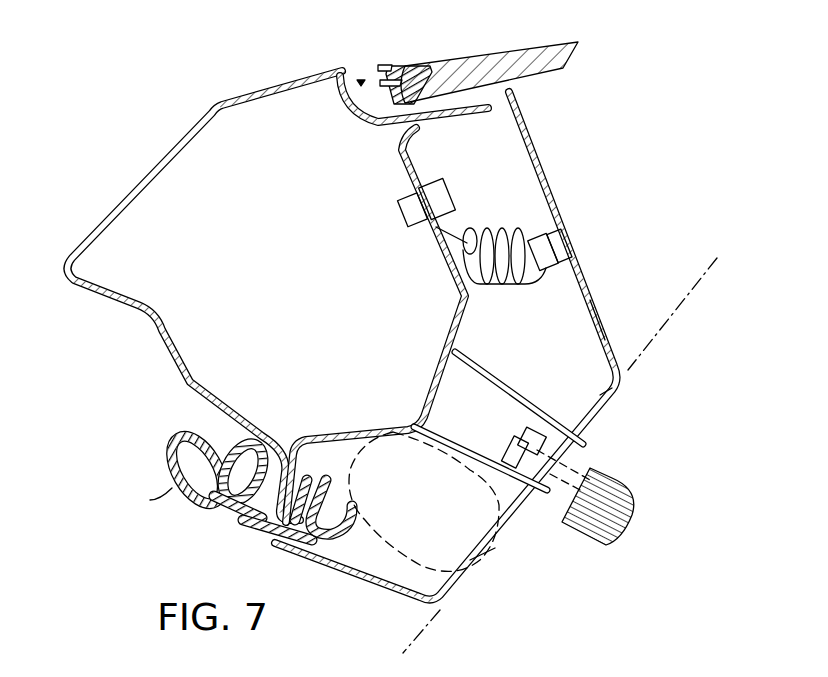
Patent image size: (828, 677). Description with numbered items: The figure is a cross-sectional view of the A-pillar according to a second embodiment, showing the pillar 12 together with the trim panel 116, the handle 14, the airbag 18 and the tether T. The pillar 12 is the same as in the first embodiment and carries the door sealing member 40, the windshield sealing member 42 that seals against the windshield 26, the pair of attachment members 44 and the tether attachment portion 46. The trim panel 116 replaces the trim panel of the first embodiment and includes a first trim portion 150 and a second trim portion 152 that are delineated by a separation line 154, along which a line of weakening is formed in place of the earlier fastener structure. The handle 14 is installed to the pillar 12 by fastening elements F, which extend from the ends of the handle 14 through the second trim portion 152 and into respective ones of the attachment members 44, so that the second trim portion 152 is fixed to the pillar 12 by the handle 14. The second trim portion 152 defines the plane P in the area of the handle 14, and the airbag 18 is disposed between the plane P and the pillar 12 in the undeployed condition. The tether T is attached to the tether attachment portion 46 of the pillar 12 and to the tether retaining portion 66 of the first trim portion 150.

The pillar 12 is at (136, 161).
The handle 14 is at (620, 527).
The airbag 18 is at (390, 540).
The windshield 26 is at (496, 62).
The door sealing member 40 is at (182, 487).
The windshield sealing member 42 is at (400, 60).
The attachment members 44 is at (493, 375).
The tether attachment portion 46 is at (423, 228).
The tether retaining portion 66 is at (555, 238).
The trim panel 116 is at (587, 184).
The first trim portion 150 is at (610, 342).
The second trim portion 152 is at (493, 548).
The separation line 154 is at (603, 393).
The tether T is at (500, 228).
The plane P is at (700, 278).
The fastening elements F is at (593, 449).